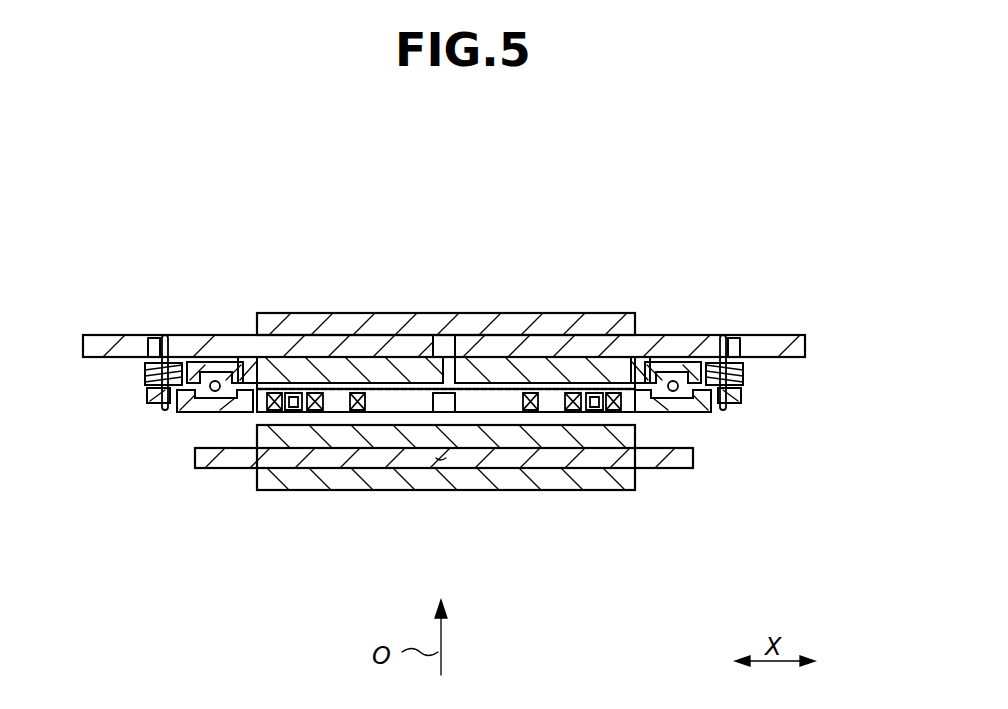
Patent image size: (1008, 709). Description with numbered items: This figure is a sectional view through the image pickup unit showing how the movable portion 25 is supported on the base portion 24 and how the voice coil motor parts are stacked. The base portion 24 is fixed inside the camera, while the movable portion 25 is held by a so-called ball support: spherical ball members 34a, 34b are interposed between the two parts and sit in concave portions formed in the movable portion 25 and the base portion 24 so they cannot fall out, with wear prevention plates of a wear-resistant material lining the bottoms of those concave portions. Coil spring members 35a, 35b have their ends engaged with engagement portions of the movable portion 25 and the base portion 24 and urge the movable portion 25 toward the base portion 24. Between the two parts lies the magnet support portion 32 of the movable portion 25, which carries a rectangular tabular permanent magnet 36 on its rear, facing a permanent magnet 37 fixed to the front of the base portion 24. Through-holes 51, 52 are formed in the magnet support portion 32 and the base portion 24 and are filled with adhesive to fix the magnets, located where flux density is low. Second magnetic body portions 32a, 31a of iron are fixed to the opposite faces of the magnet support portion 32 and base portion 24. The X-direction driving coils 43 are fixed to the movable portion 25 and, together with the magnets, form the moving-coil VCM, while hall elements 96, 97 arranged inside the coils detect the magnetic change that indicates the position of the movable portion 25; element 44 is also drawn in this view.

The base portion 24 is at (233, 340).
The movable portion 25 is at (562, 470).
The second magnetic body portion 31a is at (456, 332).
The magnet support portion 32 is at (662, 470).
The second magnetic body portion 32a is at (610, 493).
The ball member 34a is at (210, 395).
The ball member 34b is at (655, 365).
The spring member 35a is at (145, 373).
The spring member 35b is at (745, 373).
The permanent magnet 36 is at (492, 472).
The permanent magnet 37 is at (540, 370).
The X-direction driving coil 43 is at (316, 395).
The coil 44 is at (529, 395).
The through-hole 51 is at (440, 462).
The through-hole 52 is at (443, 400).
The hall element 96 is at (412, 368).
The hall element 97 is at (294, 395).